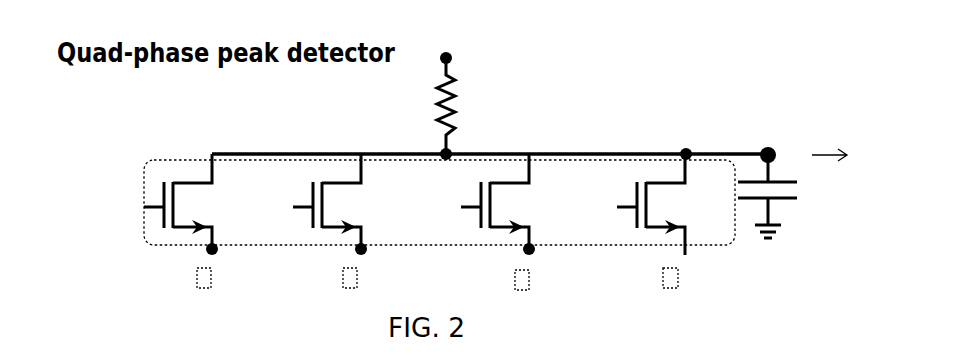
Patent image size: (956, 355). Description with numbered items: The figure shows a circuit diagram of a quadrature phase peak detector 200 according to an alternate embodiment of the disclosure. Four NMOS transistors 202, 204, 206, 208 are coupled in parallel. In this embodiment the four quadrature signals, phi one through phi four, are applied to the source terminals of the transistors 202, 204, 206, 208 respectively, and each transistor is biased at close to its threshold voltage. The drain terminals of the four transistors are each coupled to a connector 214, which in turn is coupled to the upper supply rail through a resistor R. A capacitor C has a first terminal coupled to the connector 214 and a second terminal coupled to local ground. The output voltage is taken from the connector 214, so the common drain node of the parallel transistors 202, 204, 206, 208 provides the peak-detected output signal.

The quadrature phase peak detector 200 is at (677, 48).
The NMOS transistor 202 is at (182, 204).
The NMOS transistor 204 is at (333, 204).
The NMOS transistor 206 is at (499, 204).
The NMOS transistor 208 is at (661, 204).
The connector 214 is at (487, 152).